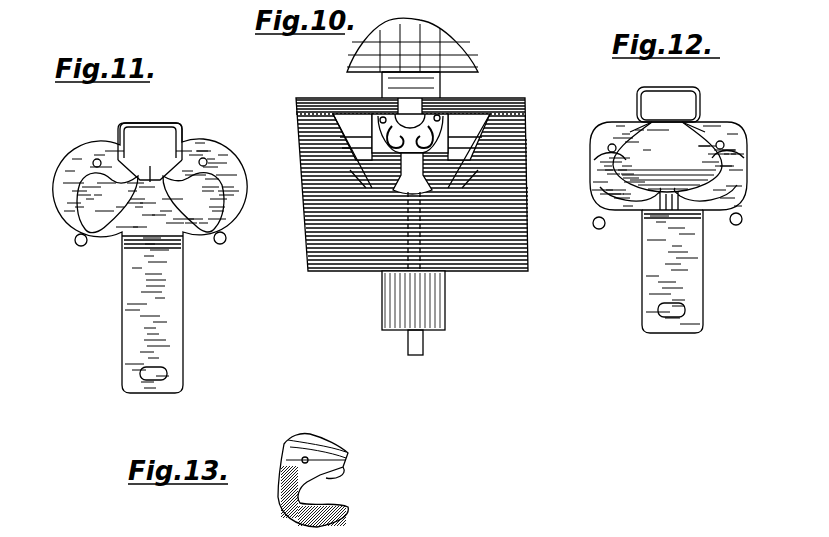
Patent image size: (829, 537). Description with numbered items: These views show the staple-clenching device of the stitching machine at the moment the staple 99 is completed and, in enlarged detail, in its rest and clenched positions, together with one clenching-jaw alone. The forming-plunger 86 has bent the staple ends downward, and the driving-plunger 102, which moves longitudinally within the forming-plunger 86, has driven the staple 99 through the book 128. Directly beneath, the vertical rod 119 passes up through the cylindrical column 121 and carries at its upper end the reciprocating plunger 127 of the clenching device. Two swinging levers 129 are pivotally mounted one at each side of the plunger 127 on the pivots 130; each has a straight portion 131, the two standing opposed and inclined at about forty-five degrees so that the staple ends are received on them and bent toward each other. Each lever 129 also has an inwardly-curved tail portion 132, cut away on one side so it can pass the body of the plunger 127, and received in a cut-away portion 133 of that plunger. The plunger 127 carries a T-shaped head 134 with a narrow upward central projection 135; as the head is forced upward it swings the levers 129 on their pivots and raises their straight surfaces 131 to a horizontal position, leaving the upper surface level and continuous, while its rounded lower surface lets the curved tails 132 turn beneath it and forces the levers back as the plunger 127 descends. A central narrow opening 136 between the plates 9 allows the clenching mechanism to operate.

In FIG. 10, the plates 9 is at (422, 184).
In FIG. 10, the forming-plunger 86 is at (440, 78).
In FIG. 11, the staple 99 is at (164, 122).
In FIG. 12, the staple 99 is at (672, 88).
In FIG. 10, the driving-plunger 102 is at (392, 80).
In FIG. 10, the vertical rod 119 is at (426, 345).
In FIG. 10, the cylindrical column 121 is at (384, 304).
In FIG. 11, the reciprocating plunger 127 is at (172, 283).
In FIG. 10, the reciprocating plunger 127 is at (419, 177).
In FIG. 12, the reciprocating plunger 127 is at (652, 278).
In FIG. 10, the book 128 is at (330, 100).
In FIG. 11, the swinging levers 129 is at (72, 180).
In FIG. 10, the swinging levers 129 is at (315, 105).
In FIG. 12, the swinging levers 129 is at (600, 152).
In FIG. 13, the swinging levers 129 is at (290, 452).
In FIG. 11, the pivots 130 is at (96, 159).
In FIG. 10, the pivots 130 is at (381, 118).
In FIG. 12, the pivots 130 is at (612, 144).
In FIG. 11, the straight portion 131 is at (119, 150).
In FIG. 12, the straight portion 131 is at (630, 125).
In FIG. 13, the straight portion 131 is at (337, 450).
In FIG. 11, the inwardly-curved tail portions 132 is at (70, 222).
In FIG. 10, the inwardly-curved tail portions 132 is at (335, 177).
In FIG. 12, the inwardly-curved tail portions 132 is at (606, 190).
In FIG. 13, the inwardly-curved tail portions 132 is at (352, 508).
In FIG. 11, the cut-away portion 133 is at (125, 250).
In FIG. 12, the cut-away portion 133 is at (684, 213).
In FIG. 11, the T-shaped head 134 is at (165, 212).
In FIG. 12, the T-shaped head 134 is at (742, 160).
In FIG. 11, the central projection 135 is at (155, 160).
In FIG. 12, the central projection 135 is at (670, 109).
In FIG. 10, the central narrow opening 136 is at (447, 113).